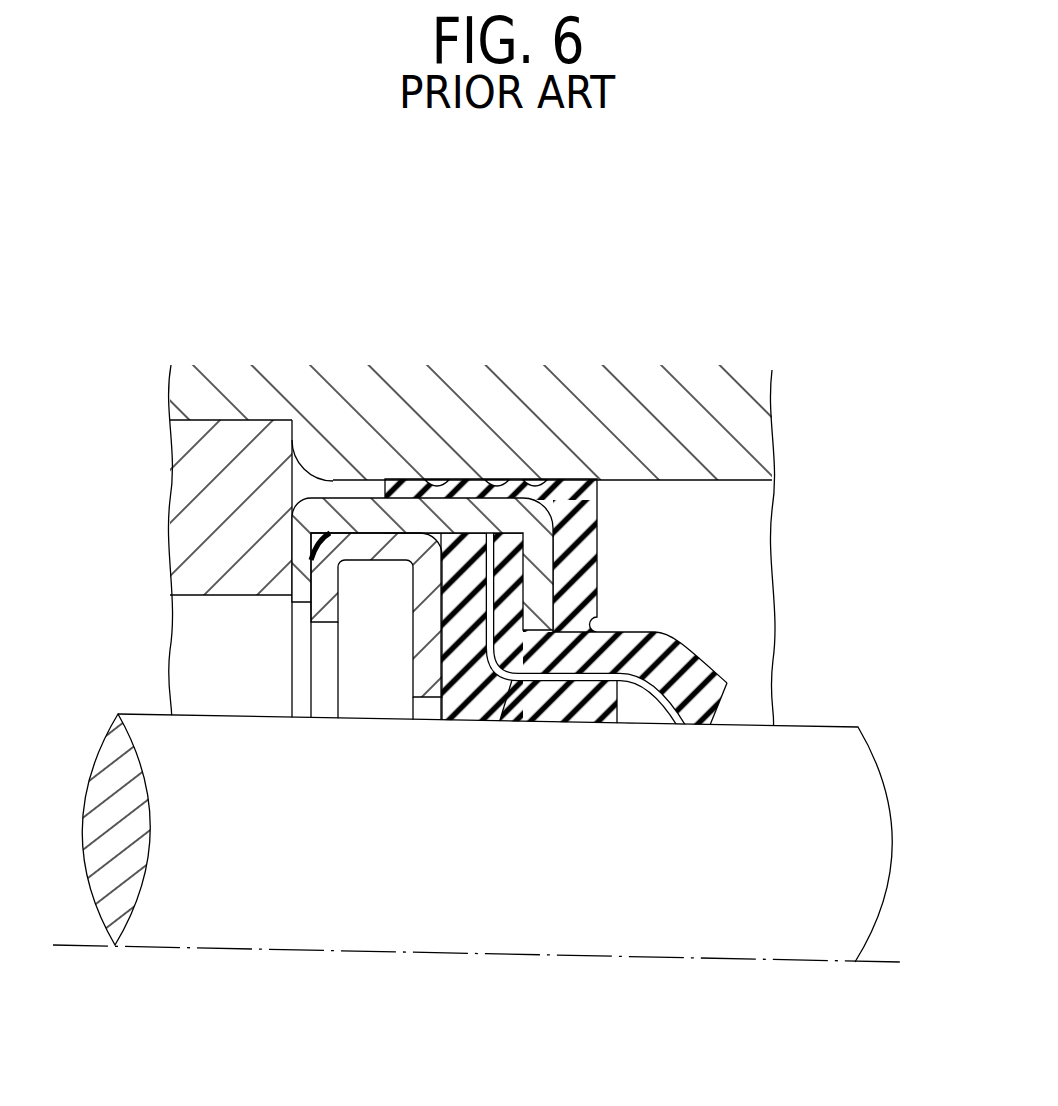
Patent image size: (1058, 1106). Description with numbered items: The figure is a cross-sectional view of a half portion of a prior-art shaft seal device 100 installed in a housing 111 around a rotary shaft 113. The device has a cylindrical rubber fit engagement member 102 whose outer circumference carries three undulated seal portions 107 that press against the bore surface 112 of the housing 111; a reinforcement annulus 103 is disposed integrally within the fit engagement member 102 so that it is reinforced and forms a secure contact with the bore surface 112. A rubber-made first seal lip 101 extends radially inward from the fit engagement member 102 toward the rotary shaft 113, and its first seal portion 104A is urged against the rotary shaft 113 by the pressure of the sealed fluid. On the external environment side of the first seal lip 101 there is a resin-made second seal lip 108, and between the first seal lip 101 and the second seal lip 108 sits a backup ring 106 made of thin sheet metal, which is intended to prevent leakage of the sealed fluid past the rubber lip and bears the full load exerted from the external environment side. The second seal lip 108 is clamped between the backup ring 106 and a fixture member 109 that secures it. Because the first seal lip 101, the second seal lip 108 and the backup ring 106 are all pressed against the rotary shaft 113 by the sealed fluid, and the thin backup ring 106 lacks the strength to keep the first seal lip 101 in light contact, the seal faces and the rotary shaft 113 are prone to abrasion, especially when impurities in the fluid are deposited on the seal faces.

The shaft seal device 100 is at (587, 521).
The first seal lip 101 is at (680, 656).
The fit engagement member 102 is at (580, 492).
The reinforcement annulus 103 is at (374, 512).
The first seal portion 104A is at (712, 700).
The backup ring 106 is at (502, 693).
The undulated seal portions 107 is at (564, 479).
The second seal lip 108 is at (462, 690).
The fixture member 109 is at (417, 668).
The housing 111 is at (750, 433).
The bore surface 112 is at (725, 483).
The rotary shaft 113 is at (827, 740).